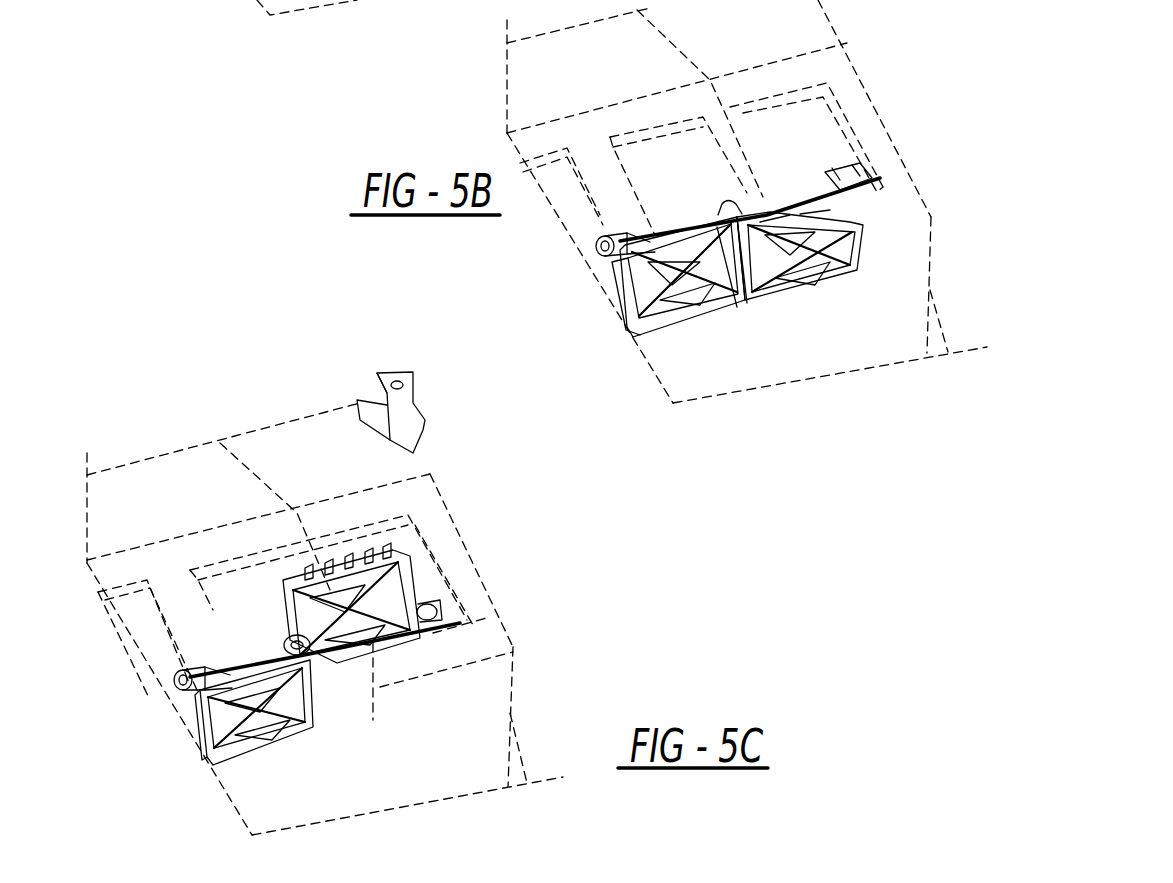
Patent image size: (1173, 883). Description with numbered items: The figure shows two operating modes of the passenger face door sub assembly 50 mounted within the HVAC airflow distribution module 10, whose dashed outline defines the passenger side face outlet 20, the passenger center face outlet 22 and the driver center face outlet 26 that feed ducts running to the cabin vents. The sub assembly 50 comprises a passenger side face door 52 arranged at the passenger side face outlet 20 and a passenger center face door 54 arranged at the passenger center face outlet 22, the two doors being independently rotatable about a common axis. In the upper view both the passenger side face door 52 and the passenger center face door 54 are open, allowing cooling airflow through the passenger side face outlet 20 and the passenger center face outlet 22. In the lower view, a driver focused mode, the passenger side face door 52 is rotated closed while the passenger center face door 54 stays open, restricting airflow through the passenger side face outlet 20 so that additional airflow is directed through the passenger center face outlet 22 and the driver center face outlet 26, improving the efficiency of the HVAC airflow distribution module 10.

In FIG. 5C, the HVAC airflow distribution module 10 is at (133, 437).
In FIG. 5B, the passenger side face outlet 20 is at (833, 103).
In FIG. 5C, the passenger side face outlet 20 is at (390, 530).
In FIG. 5B, the passenger center face outlet 22 is at (677, 133).
In FIG. 5C, the passenger center face outlet 22 is at (257, 563).
In FIG. 5B, the driver center face outlet 26 is at (553, 163).
In FIG. 5C, the driver center face outlet 26 is at (180, 654).
In FIG. 5B, the passenger face door sub assembly 50 is at (717, 263).
In FIG. 5C, the passenger face door sub assembly 50 is at (267, 641).
In FIG. 5B, the passenger side face door 52 is at (827, 221).
In FIG. 5C, the passenger side face door 52 is at (383, 614).
In FIG. 5B, the passenger center face door 54 is at (680, 263).
In FIG. 5C, the passenger center face door 54 is at (234, 732).